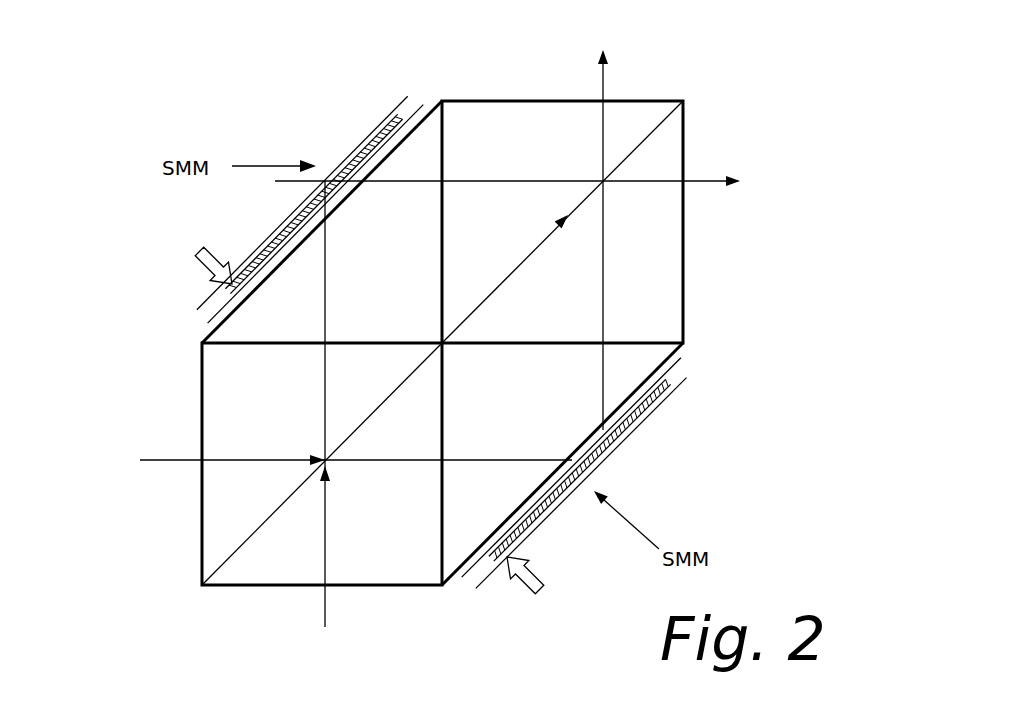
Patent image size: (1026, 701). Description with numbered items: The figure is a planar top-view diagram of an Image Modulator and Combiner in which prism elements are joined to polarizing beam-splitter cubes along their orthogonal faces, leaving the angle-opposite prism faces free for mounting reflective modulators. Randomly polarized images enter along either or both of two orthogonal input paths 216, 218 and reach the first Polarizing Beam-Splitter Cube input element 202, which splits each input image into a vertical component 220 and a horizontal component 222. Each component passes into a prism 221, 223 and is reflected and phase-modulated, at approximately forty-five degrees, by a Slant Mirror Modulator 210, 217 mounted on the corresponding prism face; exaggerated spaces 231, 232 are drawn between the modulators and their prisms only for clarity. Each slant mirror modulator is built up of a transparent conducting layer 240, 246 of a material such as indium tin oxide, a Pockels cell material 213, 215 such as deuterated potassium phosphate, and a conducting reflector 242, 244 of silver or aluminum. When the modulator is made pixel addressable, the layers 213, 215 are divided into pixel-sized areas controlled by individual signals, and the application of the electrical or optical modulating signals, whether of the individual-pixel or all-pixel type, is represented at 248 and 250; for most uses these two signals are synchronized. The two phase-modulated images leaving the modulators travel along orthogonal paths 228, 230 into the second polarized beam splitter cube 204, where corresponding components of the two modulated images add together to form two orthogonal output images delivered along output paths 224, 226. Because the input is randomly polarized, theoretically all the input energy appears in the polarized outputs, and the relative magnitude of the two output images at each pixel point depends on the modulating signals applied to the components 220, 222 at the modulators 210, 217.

The Polarizing Beam-Splitter Cube input element 202 is at (203, 400).
The second polarized beam splitter cube 204 is at (684, 128).
The reflective modulator 210 is at (662, 434).
The Pockels cell material 213 is at (688, 378).
The Pockels cell material 215 is at (197, 311).
The input path 216 is at (325, 604).
The reflective modulator 217 is at (372, 87).
The input path 218 is at (176, 462).
The vertical component 220 is at (326, 364).
The prism 221 is at (618, 375).
The horizontal component 222 is at (457, 462).
The prism 223 is at (434, 163).
The output path 224 is at (700, 183).
The output path 226 is at (604, 82).
The orthogonal path 228 is at (606, 305).
The orthogonal path 230 is at (408, 181).
The exaggerated space 231 is at (683, 350).
The exaggerated space 232 is at (426, 106).
The transparent conducting layer 240 is at (461, 579).
The conducting reflector 242 is at (470, 592).
The conducting reflector 244 is at (226, 292).
The transparent conducting layer 246 is at (208, 325).
The slant mirror modulator signal 248 is at (548, 578).
The slant mirror modulator signal 250 is at (196, 254).